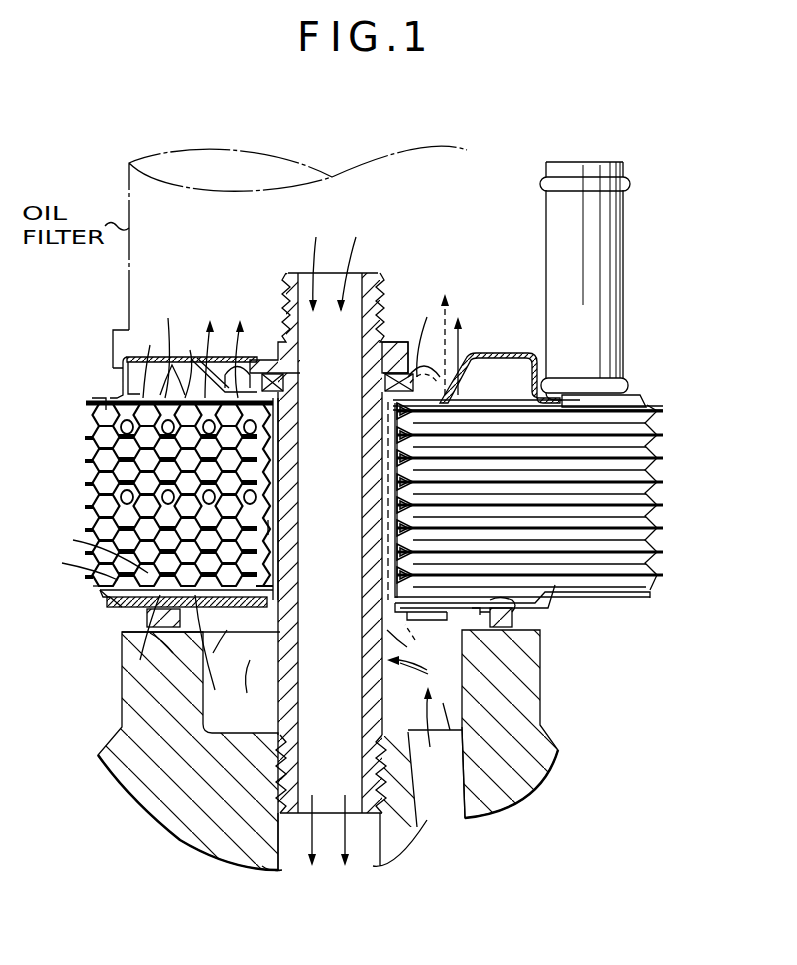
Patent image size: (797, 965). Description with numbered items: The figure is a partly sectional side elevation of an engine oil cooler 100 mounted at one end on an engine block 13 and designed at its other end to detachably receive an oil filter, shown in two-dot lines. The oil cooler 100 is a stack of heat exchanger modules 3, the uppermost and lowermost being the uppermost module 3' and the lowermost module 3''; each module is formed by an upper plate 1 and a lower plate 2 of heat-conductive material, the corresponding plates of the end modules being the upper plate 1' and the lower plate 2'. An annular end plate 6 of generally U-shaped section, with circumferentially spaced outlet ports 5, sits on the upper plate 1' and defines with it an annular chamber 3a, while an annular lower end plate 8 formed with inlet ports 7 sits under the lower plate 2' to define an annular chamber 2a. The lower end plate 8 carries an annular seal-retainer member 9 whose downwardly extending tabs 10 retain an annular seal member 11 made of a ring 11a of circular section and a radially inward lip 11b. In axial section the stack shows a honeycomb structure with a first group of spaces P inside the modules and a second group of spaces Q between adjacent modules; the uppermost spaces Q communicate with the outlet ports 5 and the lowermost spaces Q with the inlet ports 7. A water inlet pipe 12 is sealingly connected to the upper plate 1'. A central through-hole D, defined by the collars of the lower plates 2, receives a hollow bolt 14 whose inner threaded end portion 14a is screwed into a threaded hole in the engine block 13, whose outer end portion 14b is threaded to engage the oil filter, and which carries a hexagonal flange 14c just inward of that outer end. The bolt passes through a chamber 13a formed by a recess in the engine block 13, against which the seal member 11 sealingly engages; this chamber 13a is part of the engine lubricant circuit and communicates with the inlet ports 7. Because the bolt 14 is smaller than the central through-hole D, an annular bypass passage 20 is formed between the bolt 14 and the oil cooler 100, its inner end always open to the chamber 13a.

The upper plate 1 is at (74, 507).
The upper plate of uppermost module 1' is at (84, 383).
The lower plate 2 is at (163, 540).
The lower plate of lowermost module 2' is at (86, 613).
The annular chamber 2a is at (130, 628).
The heat exchanger module 3 is at (145, 495).
The uppermost module 3' is at (155, 409).
The lowermost module 3'' is at (68, 602).
The annular chamber 3a is at (168, 380).
The outlet ports 5 is at (247, 360).
The annular end plate 6 is at (123, 360).
The inlet ports 7 is at (474, 610).
The annular lower end plate 8 is at (143, 622).
The annular seal-retainer member 9 is at (163, 646).
The tabs 10 is at (443, 607).
The annular seal member 11 is at (605, 598).
The ring 11a is at (512, 608).
The lip 11b is at (515, 628).
The water inlet pipe 12 is at (630, 236).
The engine block 13 is at (525, 698).
The chamber 13a is at (464, 768).
The hollow bolt 14 is at (380, 287).
The inner threaded end portion 14a is at (396, 848).
The outer end portion 14b is at (285, 274).
The flange 14c is at (393, 353).
The annular bypass passage 20 is at (278, 565).
The engine oil cooler 100 is at (678, 483).
The central through-hole D is at (273, 527).
The first group of spaces P is at (251, 490).
The second group of spaces Q is at (188, 462).